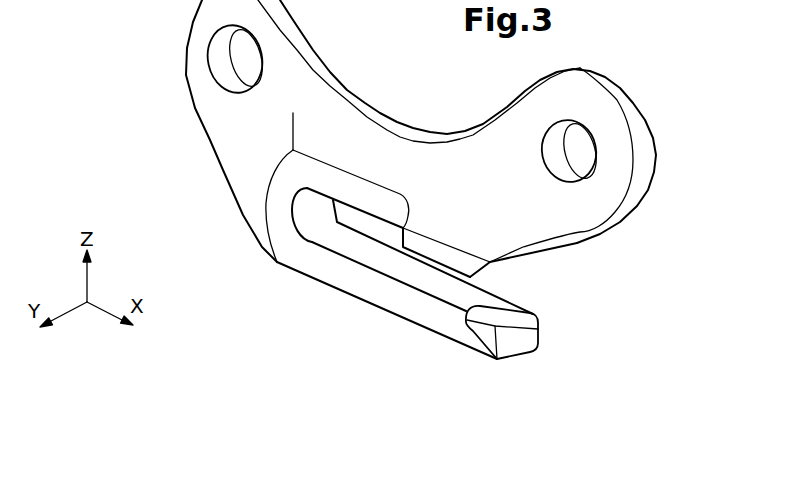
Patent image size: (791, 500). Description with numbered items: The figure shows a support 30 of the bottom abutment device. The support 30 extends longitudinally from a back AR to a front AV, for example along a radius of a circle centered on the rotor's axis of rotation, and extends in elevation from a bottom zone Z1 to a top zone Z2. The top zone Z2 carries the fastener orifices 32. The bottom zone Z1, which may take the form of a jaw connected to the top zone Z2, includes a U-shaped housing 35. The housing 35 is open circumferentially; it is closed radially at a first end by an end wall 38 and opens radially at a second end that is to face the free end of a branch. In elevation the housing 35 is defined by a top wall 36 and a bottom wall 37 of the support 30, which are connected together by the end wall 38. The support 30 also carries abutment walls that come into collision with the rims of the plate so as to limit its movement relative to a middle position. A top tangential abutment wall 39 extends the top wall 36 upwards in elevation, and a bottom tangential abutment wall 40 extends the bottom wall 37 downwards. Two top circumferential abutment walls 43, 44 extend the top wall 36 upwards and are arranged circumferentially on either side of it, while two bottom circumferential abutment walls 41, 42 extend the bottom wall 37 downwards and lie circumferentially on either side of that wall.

The support 30 is at (404, 219).
The fastener orifices 32 is at (242, 57).
The U-shaped housing 35 is at (470, 340).
The top wall 36 is at (378, 217).
The bottom wall 37 is at (490, 307).
The end wall 38 is at (313, 217).
The top tangential abutment wall 39 is at (527, 275).
The bottom tangential abutment wall 40 is at (524, 352).
The bottom circumferential abutment wall 41 is at (450, 325).
The bottom circumferential abutment wall 42 is at (540, 330).
The top circumferential abutment wall 43 is at (450, 255).
The top circumferential abutment wall 44 is at (580, 235).
The bottom zone Z1 is at (312, 294).
The top zone Z2 is at (678, 168).
The back AR is at (196, 184).
The front AV is at (570, 389).